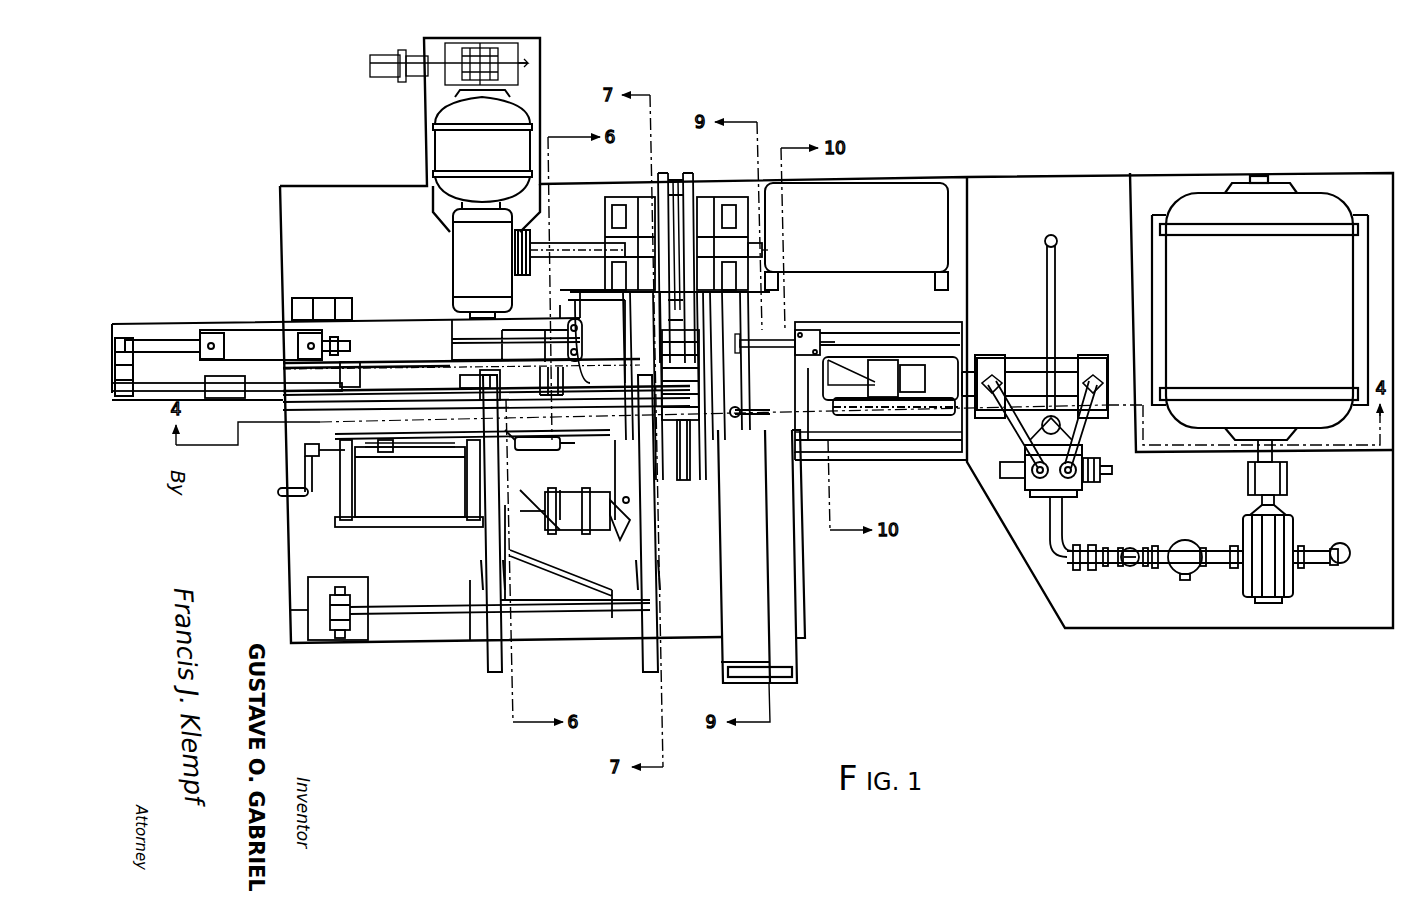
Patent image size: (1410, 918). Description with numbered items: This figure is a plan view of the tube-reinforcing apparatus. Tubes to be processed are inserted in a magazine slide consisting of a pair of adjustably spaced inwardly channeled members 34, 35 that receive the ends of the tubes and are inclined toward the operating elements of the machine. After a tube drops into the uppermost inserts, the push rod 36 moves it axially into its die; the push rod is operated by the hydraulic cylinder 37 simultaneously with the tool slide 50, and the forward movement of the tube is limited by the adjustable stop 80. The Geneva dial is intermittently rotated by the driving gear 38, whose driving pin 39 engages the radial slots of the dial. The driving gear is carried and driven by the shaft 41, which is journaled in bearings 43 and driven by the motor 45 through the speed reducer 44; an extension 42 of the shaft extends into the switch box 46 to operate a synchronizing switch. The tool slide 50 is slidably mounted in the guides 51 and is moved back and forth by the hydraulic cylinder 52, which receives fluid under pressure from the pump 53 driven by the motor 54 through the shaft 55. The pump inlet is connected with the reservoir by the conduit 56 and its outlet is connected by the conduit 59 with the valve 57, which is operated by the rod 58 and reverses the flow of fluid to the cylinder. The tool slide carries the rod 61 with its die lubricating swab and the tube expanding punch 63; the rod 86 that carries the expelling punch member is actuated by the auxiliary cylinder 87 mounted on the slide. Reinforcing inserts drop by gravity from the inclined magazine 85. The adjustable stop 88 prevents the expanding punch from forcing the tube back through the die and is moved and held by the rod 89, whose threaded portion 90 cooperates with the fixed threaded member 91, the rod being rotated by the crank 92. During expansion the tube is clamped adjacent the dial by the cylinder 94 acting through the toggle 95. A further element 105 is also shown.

The inwardly channeled member 34 is at (490, 650).
The inwardly channeled member 35 is at (645, 650).
The push rod 36 is at (280, 392).
The hydraulic cylinder 37 is at (250, 340).
The driving gear 38 is at (688, 190).
The driving pin 39 is at (676, 180).
The shaft 41 is at (575, 252).
The extension 42 is at (762, 250).
The bearings 43 is at (620, 197).
The speed reducer 44 is at (470, 264).
The motor 45 is at (460, 152).
The switch box 46 is at (885, 247).
The tool slide 50 is at (895, 340).
The guides 51 is at (937, 440).
The hydraulic cylinder 52 is at (1020, 362).
The pump 53 is at (1295, 578).
The motor 54 is at (1280, 305).
The shaft 55 is at (1275, 455).
The conduit 56 is at (1340, 550).
The valve 57 is at (1078, 495).
The rod 58 is at (1117, 468).
The conduit 59 is at (1120, 553).
The rod 61 is at (770, 340).
The tube expanding punch 63 is at (747, 416).
The adjustable stop 80 is at (727, 395).
The inclined magazine 85 is at (735, 545).
The rod 86 is at (835, 368).
The auxiliary cylinder 87 is at (897, 392).
The adjustable stop 88 is at (545, 428).
The rod 89 is at (448, 450).
The threaded portion 90 is at (405, 448).
The fixed threaded member 91 is at (382, 452).
The crank 92 is at (298, 483).
The cylinder 94 is at (560, 520).
The toggle 95 is at (620, 525).
The rod 105 is at (1056, 286).